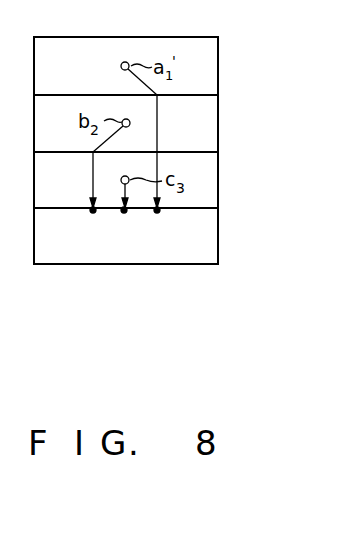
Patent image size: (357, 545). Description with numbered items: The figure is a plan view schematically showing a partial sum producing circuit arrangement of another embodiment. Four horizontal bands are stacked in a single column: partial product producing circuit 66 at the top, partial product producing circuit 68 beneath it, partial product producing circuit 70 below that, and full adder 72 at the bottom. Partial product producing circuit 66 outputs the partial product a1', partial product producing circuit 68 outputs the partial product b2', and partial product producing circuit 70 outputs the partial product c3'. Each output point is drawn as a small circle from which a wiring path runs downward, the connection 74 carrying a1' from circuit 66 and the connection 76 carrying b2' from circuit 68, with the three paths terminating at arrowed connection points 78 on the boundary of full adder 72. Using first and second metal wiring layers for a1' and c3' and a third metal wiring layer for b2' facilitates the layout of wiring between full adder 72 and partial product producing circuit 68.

The partial product producing circuit 66 is at (218, 72).
The partial product producing circuit 68 is at (218, 130).
The partial product producing circuit 70 is at (218, 185).
The full adder 72 is at (218, 240).
The projection line 74 is at (163, 127).
The projection line 76 is at (90, 181).
The projected point 78 is at (113, 208).